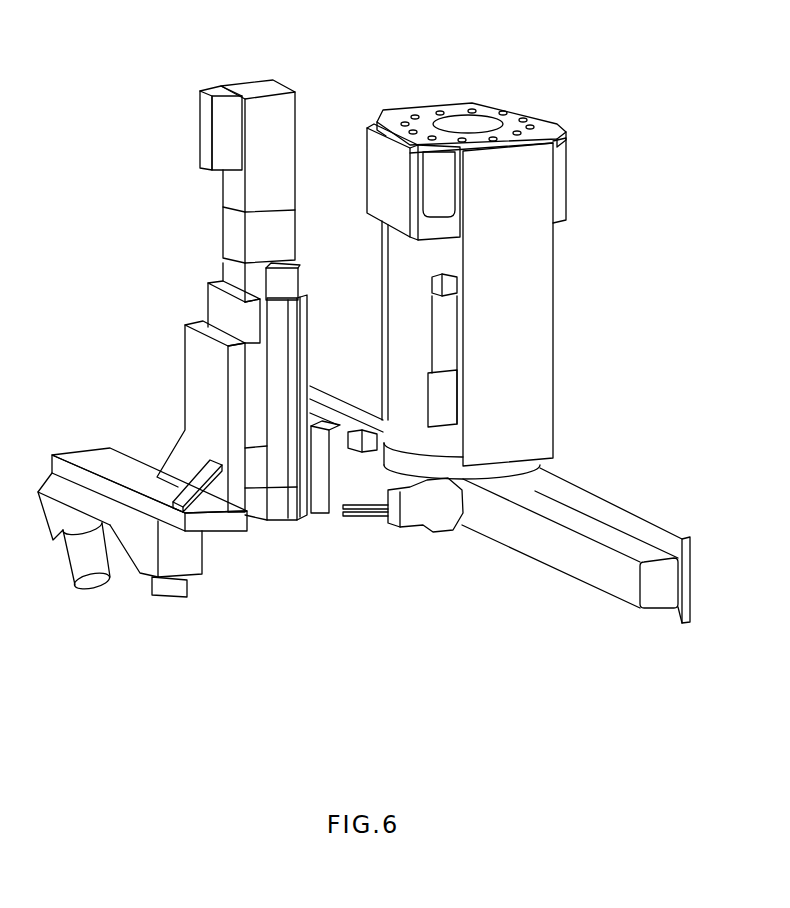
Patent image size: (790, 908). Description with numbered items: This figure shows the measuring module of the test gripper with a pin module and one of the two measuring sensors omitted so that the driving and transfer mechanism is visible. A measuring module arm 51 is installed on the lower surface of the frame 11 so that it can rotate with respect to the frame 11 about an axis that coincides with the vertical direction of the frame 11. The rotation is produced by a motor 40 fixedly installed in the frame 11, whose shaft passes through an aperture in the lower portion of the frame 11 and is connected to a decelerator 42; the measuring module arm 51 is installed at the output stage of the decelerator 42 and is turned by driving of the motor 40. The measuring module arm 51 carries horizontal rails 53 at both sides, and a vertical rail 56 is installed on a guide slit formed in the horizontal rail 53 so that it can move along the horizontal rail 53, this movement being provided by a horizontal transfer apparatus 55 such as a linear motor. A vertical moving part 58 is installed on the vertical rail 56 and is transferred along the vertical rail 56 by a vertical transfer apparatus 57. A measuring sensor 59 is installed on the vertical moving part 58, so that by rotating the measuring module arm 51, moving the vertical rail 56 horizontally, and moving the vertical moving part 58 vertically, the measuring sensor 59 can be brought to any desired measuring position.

The frame 11 is at (540, 271).
The motor 40 is at (445, 340).
The decelerator 42 is at (410, 448).
The measuring module arm 51 is at (602, 580).
The horizontal rail 53 is at (322, 502).
The horizontal transfer apparatus 55 is at (442, 522).
The vertical rail 56 is at (311, 316).
The vertical transfer apparatus 57 is at (258, 88).
The vertical moving part 58 is at (195, 375).
The measuring sensor 59 is at (148, 566).